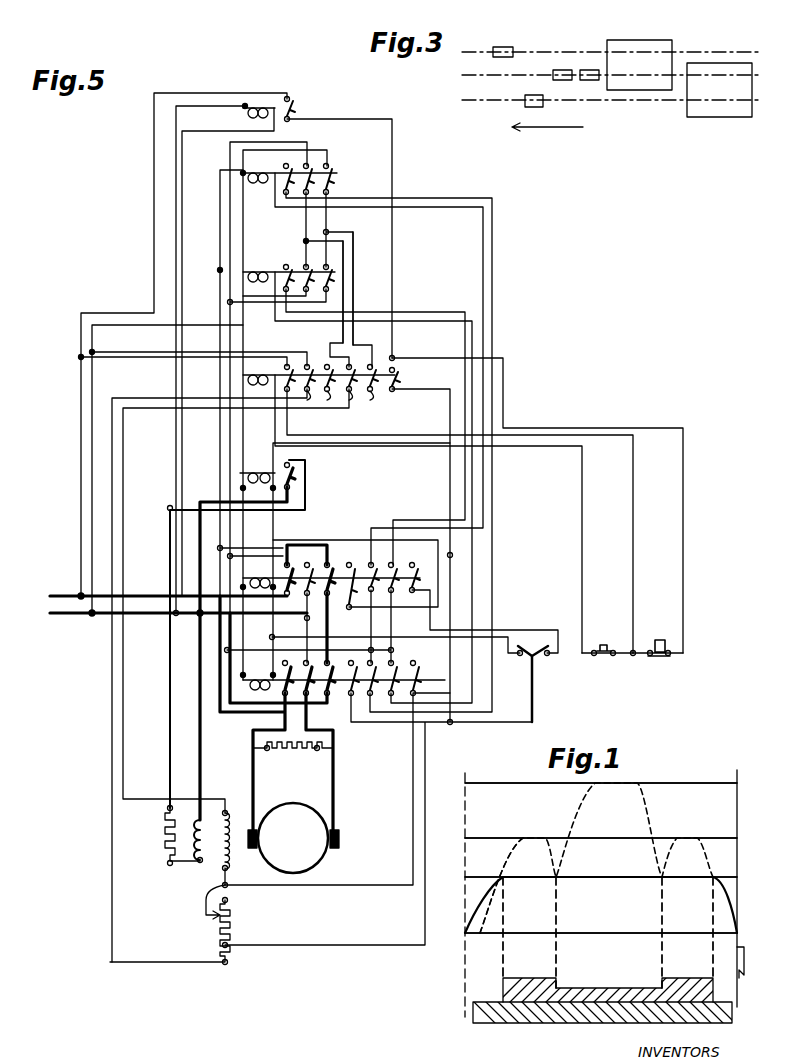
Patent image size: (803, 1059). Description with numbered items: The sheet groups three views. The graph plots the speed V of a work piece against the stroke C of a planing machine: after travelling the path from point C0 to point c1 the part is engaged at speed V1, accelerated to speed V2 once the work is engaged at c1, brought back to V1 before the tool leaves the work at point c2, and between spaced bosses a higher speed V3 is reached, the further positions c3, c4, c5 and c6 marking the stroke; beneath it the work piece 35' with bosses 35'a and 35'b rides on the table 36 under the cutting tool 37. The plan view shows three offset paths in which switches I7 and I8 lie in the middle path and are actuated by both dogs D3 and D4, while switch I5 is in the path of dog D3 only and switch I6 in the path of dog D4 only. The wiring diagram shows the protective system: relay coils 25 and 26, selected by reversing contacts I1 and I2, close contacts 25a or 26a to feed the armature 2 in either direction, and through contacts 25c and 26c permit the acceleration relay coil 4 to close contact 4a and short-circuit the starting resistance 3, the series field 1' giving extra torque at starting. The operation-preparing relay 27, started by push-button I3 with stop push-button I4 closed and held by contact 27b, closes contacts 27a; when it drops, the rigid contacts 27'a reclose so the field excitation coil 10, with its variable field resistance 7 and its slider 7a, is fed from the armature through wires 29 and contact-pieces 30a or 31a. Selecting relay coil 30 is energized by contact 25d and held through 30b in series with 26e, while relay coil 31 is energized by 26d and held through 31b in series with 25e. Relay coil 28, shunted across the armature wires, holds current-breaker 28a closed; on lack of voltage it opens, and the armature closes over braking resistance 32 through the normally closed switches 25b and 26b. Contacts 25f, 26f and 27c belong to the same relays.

In FIG. 3, the switch I5 is at (510, 38).
In FIG. 3, the switch I6 is at (525, 96).
In FIG. 3, the switch I7 is at (560, 70).
In FIG. 3, the switch I8 is at (590, 68).
In FIG. 3, the dog D3 is at (660, 90).
In FIG. 3, the dog D4 is at (722, 117).
In FIG. 3, the stroke of operation C is at (547, 119).
In FIG. 1, the speed V1 is at (612, 879).
In FIG. 1, the speed V2 is at (612, 840).
In FIG. 1, the speed V3 is at (612, 785).
In FIG. 1, the point c0 C0 is at (611, 930).
In FIG. 1, the point c1 is at (703, 927).
In FIG. 1, the point c2 is at (514, 927).
In FIG. 1, the point c3 is at (453, 943).
In FIG. 1, the point c4 is at (498, 894).
In FIG. 1, the point c5 is at (672, 932).
In FIG. 1, the point c6 is at (566, 932).
In FIG. 1, the work piece 35' is at (612, 984).
In FIG. 1, the boss 35'a is at (683, 1020).
In FIG. 1, the boss 35'b is at (518, 1019).
In FIG. 1, the table 36 is at (473, 1000).
In FIG. 1, the cutting tool 37 is at (747, 976).
In FIG. 5, the armature 2 is at (298, 813).
In FIG. 5, the starting resistance 3 is at (163, 840).
In FIG. 5, the series field 1' is at (188, 841).
In FIG. 5, the acceleration relay coil 4 is at (258, 471).
In FIG. 5, the contact 4a is at (297, 474).
In FIG. 5, the variable field resistance 7 is at (228, 930).
In FIG. 5, the slider 7a is at (207, 918).
In FIG. 5, the field excitation coil 10 is at (229, 866).
In FIG. 5, the forward motion relay coil 25 is at (343, 671).
In FIG. 5, the contact 25a is at (291, 665).
In FIG. 5, the switch 25b is at (336, 693).
In FIG. 5, the contact 25c is at (340, 678).
In FIG. 5, the contact 25d is at (372, 697).
In FIG. 5, the contact 25e is at (396, 697).
In FIG. 5, the relay contact 25f is at (421, 674).
In FIG. 5, the reverse motion relay coil 26 is at (256, 572).
In FIG. 5, the contacts 26a is at (300, 566).
In FIG. 5, the switch 26b is at (338, 568).
In FIG. 5, the contact 26c is at (350, 594).
In FIG. 5, the contact 26d is at (371, 592).
In FIG. 5, the contact 26e is at (400, 588).
In FIG. 5, the relay contact 26f is at (430, 580).
In FIG. 5, the operation-preparing relay coil 27 is at (319, 359).
In FIG. 5, the contacts 27a is at (312, 392).
In FIG. 5, the contacts 27'a is at (371, 396).
In FIG. 5, the holding contact 27b is at (295, 368).
In FIG. 5, the relay contact 27c is at (402, 377).
In FIG. 5, the relay coil 28 is at (262, 107).
In FIG. 5, the current-breaker 28a is at (296, 104).
In FIG. 5, the wires 29 is at (343, 306).
In FIG. 5, the selecting relay coil 30 is at (258, 270).
In FIG. 5, the contact-pieces 30a is at (306, 283).
In FIG. 5, the holding contact 30b is at (284, 268).
In FIG. 5, the selecting relay coil 31 is at (260, 172).
In FIG. 5, the contact-pieces 31a is at (333, 182).
In FIG. 5, the self-energizing contact 31b is at (294, 170).
In FIG. 5, the braking resistance 32 is at (295, 752).
In FIG. 5, the contact I1 is at (518, 657).
In FIG. 5, the contact I2 is at (547, 657).
In FIG. 5, the push-button I3 is at (604, 645).
In FIG. 5, the stop push-button I4 is at (660, 640).